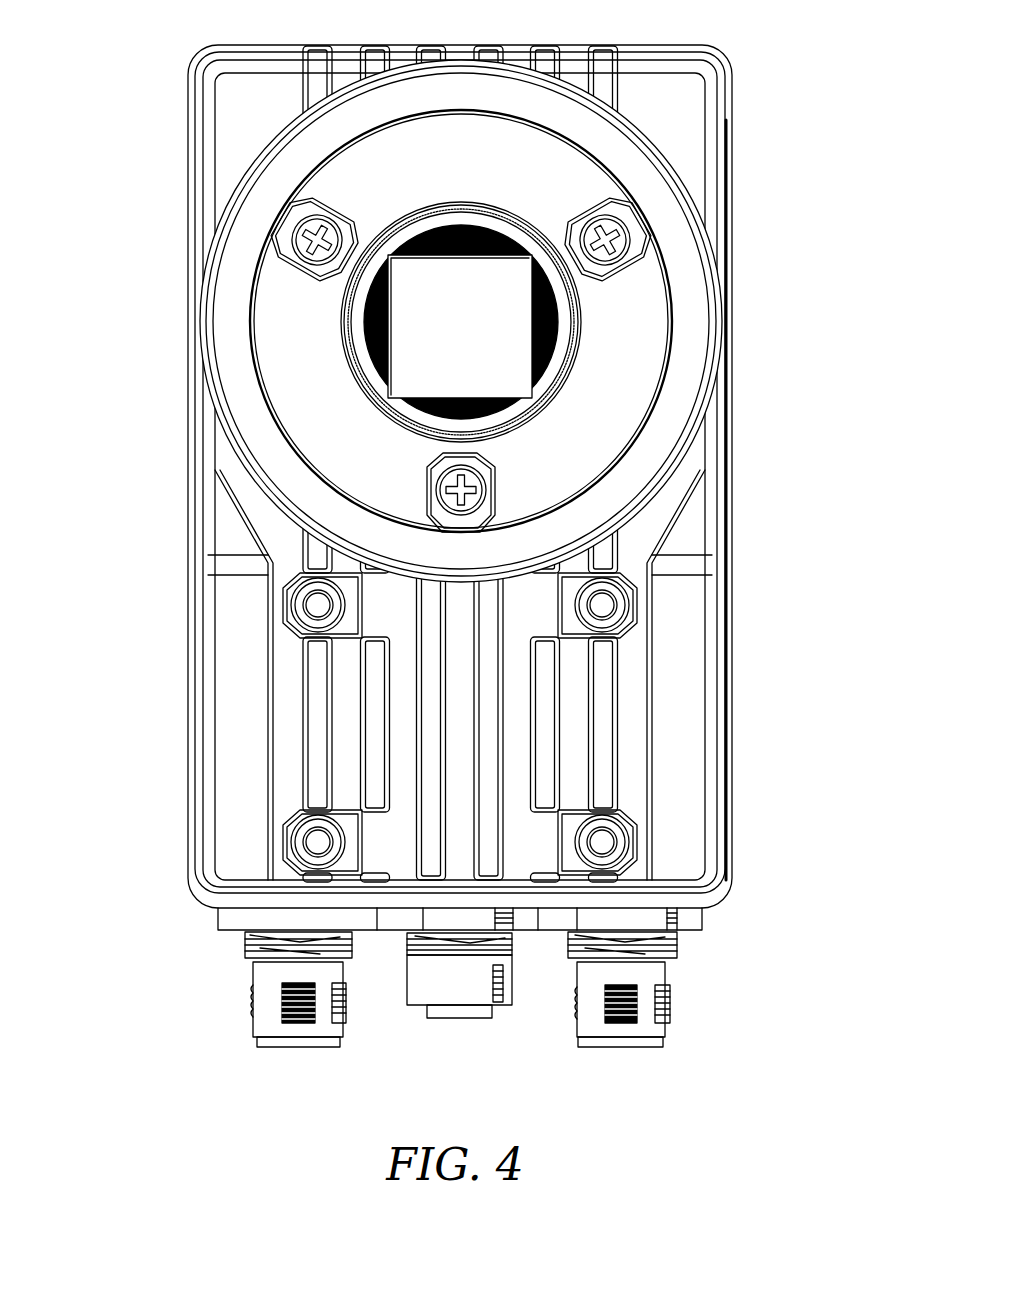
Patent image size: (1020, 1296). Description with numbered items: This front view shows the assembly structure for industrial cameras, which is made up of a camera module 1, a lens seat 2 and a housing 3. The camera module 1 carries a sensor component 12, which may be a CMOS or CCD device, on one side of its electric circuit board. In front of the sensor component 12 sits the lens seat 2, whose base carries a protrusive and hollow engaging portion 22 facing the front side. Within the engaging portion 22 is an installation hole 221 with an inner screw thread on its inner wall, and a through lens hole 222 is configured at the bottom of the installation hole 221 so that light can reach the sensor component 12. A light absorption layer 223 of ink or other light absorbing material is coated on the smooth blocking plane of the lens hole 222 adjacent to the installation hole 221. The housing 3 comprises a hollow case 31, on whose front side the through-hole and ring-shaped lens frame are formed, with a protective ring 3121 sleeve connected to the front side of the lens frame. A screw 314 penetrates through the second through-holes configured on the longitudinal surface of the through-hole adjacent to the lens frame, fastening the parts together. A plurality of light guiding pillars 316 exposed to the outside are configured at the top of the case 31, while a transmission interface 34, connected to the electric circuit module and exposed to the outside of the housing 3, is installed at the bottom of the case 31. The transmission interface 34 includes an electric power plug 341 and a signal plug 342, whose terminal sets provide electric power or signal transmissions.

The camera module 1 is at (805, 347).
The sensor component 12 is at (517, 332).
The lens seat 2 is at (112, 452).
The engaging portion 22 is at (390, 398).
The installation hole 221 is at (428, 413).
The lens hole 222 is at (386, 343).
The light absorption layer 223 is at (363, 312).
The housing 3 is at (152, 161).
The case 31 is at (228, 113).
The protective ring 3121 is at (230, 275).
The screw 314 is at (292, 232).
The light guiding pillars 316 is at (300, 47).
The transmission interface 34 is at (703, 995).
The electric power plug 341 is at (463, 997).
The signal plug 342 is at (594, 1028).